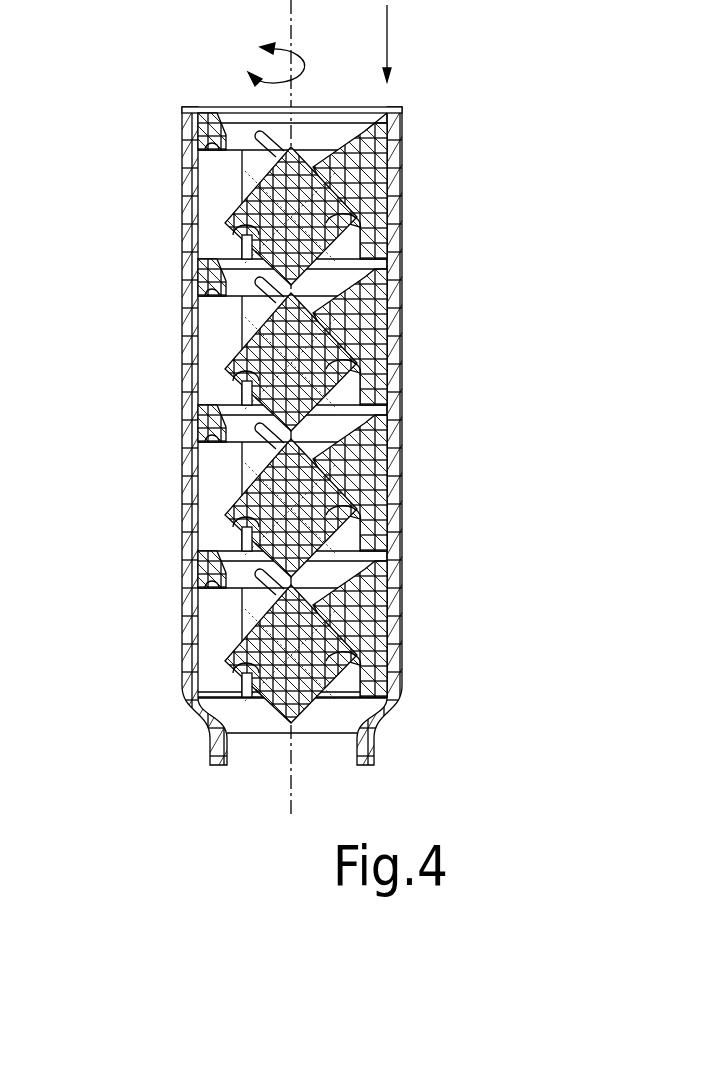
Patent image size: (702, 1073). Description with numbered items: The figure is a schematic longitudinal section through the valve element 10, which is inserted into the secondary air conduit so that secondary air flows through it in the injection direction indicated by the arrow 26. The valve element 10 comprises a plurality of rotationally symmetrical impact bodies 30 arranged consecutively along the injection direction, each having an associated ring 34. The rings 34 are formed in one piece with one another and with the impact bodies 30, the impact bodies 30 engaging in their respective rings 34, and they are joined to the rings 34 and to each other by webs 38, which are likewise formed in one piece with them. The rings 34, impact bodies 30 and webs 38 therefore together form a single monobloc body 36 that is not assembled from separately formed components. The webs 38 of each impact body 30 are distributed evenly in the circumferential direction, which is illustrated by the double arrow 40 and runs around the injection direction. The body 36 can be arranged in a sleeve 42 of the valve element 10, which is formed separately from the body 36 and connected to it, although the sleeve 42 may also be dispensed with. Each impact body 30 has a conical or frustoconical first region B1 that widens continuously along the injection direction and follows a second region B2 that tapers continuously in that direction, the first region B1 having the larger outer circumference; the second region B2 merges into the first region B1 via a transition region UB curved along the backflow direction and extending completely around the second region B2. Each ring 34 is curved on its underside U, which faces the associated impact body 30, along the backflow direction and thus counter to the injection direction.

The valve element 10 is at (369, 407).
The arrow 26 is at (390, 30).
The impact body 30 is at (318, 212).
The ring 34 is at (232, 120).
The body 36 is at (385, 176).
The web 38 is at (385, 143).
The double arrow 40 is at (322, 62).
The sleeve 42 is at (393, 307).
The underside U is at (212, 173).
The first region B1 is at (248, 633).
The transition region UB is at (185, 700).
The second region B2 is at (248, 700).